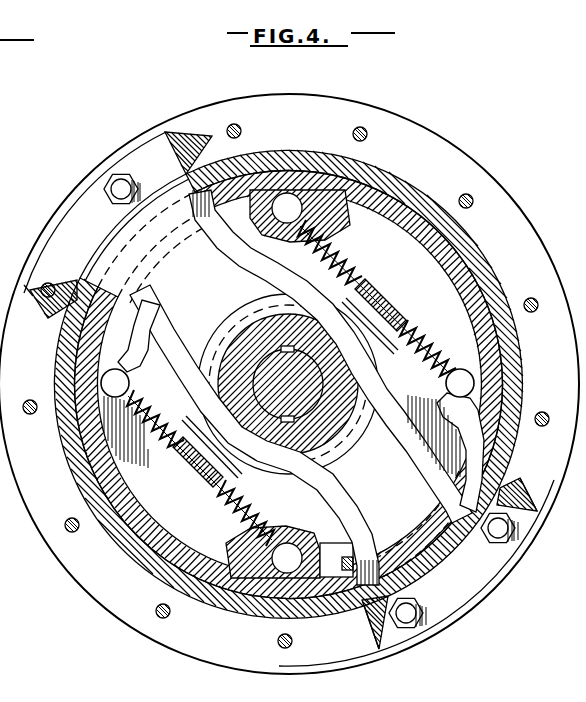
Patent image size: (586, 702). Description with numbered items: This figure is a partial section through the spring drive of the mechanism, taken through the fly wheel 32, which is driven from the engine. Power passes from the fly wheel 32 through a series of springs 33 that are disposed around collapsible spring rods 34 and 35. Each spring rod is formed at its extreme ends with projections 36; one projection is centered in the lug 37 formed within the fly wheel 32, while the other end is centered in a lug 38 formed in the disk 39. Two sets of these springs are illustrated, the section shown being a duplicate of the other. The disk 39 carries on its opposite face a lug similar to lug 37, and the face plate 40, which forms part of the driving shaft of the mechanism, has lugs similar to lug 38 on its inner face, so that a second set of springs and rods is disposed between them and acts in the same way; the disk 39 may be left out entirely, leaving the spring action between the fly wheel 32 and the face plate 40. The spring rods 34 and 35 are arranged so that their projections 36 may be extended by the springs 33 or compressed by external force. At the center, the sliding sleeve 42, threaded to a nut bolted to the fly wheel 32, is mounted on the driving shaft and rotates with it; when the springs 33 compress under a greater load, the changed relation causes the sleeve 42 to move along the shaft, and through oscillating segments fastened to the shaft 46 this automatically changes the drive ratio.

The fly wheel 32 is at (289, 384).
The springs 33 is at (404, 332).
The spring rod 34 is at (363, 276).
The spring rod 35 is at (385, 303).
The projections 36 is at (287, 383).
The lug 37 is at (445, 392).
The lug 38 is at (260, 222).
The disk 39 is at (373, 222).
The face plate 40 is at (163, 334).
The sliding sleeve 42 is at (338, 436).
The shaft 46 is at (90, 197).